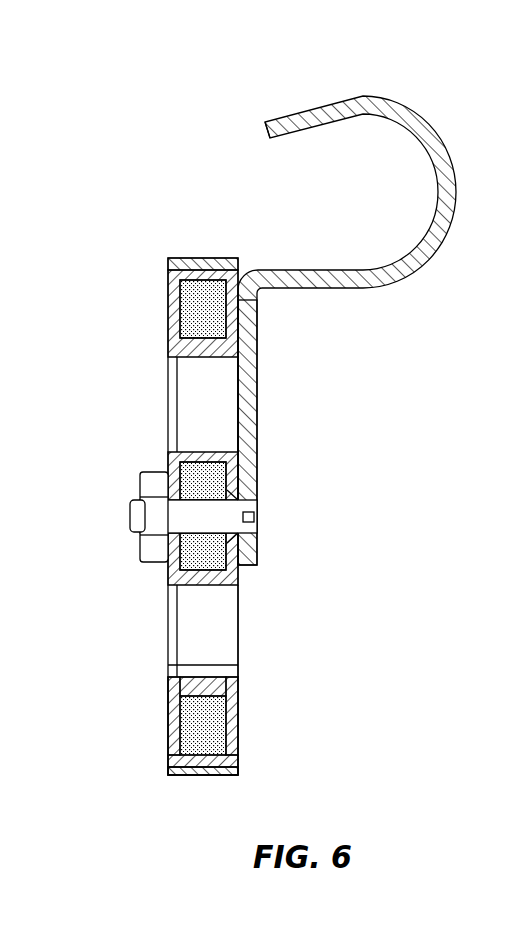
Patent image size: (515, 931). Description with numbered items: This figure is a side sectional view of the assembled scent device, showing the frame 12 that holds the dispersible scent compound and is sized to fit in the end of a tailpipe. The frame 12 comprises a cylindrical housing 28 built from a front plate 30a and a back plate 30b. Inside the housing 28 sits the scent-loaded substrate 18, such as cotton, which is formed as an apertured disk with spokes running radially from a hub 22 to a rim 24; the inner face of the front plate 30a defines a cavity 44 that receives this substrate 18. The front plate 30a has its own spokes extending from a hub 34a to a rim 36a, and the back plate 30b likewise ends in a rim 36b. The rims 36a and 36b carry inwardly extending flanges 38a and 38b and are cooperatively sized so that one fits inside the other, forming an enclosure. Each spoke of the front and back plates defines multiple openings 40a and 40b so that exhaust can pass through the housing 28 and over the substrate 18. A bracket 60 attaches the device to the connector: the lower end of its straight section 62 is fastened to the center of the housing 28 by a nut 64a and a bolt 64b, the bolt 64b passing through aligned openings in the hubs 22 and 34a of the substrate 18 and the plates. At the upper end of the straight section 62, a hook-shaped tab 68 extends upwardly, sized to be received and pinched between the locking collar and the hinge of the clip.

The frame 12 is at (198, 248).
The substrate 18 is at (208, 723).
The hub 22 is at (205, 555).
The rim 24 is at (197, 305).
The cylindrical housing 28 is at (168, 277).
The front plate 30a is at (237, 612).
The back plate 30b is at (167, 640).
The hub 34a is at (235, 478).
The rim 36a is at (237, 747).
The rim 36b is at (168, 342).
The inwardly extending flange 38a is at (207, 777).
The inwardly extending flange 38b is at (190, 777).
The openings 40a is at (237, 715).
The openings 40b is at (168, 713).
The cavity 44 is at (200, 337).
The bracket 60 is at (422, 266).
The straight section 62 is at (257, 388).
The nut 64a is at (153, 480).
The bolt 64b is at (257, 498).
The tab 68 is at (333, 100).